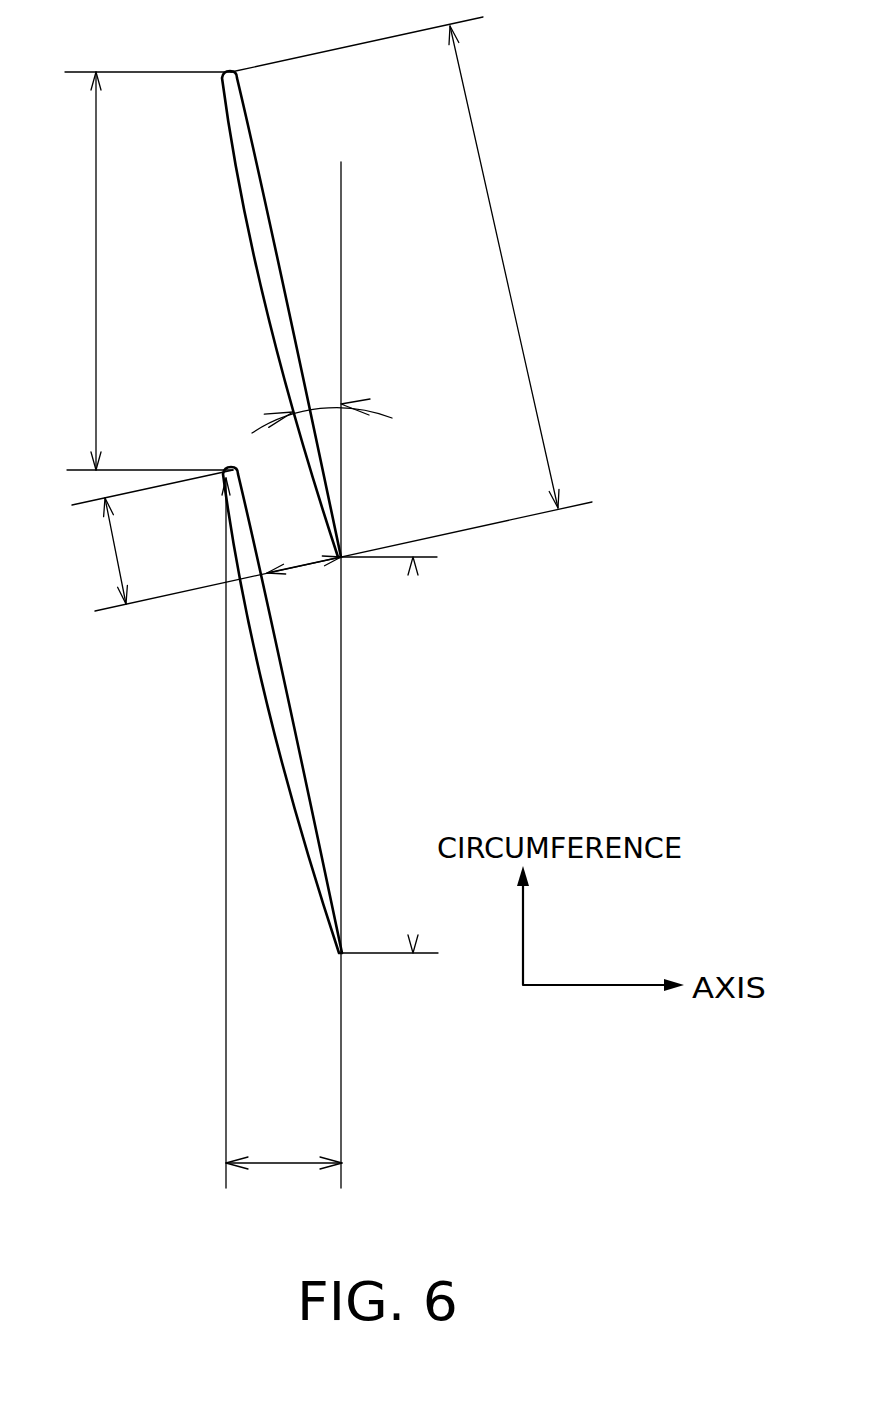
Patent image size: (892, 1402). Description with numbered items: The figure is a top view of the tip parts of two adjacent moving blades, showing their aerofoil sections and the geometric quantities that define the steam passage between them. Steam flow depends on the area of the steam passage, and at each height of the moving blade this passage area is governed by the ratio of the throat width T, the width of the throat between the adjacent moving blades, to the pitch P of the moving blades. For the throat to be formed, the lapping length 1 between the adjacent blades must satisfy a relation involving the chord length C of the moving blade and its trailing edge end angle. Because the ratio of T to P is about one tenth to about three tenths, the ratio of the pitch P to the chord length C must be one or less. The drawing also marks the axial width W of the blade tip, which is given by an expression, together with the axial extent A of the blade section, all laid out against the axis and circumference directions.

The blade axial height A is at (82, 271).
The chord length C is at (504, 267).
The lapping length 1 is at (106, 551).
The throat width T is at (304, 549).
The pitch P is at (389, 755).
The axial width W is at (284, 1146).